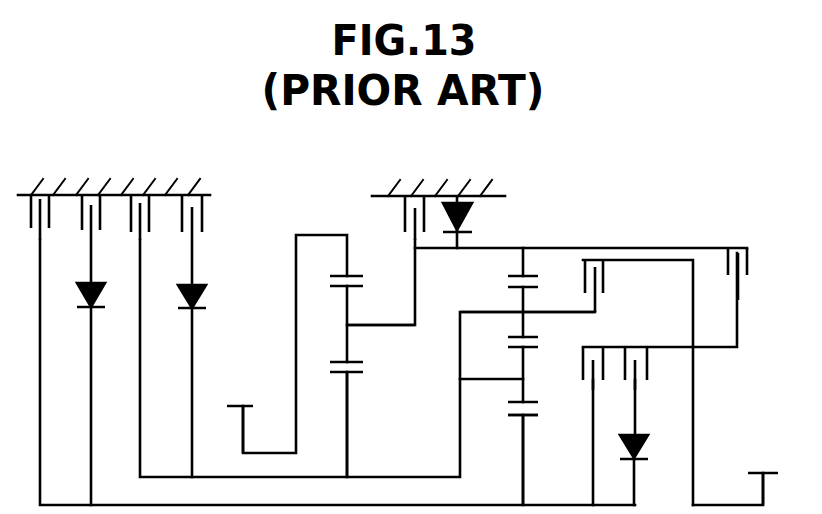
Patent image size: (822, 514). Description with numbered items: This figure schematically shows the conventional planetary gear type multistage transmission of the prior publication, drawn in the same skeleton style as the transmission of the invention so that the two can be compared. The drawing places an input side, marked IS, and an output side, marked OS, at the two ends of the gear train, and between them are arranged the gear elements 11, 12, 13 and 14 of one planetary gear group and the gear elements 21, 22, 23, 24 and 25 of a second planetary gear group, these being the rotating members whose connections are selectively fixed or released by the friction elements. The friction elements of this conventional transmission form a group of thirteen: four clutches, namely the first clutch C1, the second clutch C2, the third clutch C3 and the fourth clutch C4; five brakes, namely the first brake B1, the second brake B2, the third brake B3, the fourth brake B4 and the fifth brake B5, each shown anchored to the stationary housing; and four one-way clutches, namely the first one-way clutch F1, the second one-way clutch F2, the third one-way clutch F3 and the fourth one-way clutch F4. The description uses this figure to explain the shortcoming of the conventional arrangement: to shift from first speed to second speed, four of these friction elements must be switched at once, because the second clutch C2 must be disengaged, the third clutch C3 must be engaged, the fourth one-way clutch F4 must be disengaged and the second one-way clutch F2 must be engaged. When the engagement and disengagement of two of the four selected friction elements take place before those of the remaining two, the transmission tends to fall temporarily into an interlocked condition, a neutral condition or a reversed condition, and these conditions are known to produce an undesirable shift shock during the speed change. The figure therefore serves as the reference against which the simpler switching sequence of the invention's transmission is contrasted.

The fifth brake B5 is at (49, 213).
The fourth brake B4 is at (100, 213).
The third brake B3 is at (149, 213).
The second brake B2 is at (203, 220).
The first brake B1 is at (400, 218).
The fourth one-way clutch F4 is at (102, 290).
The third one-way clutch F3 is at (205, 292).
The second one-way clutch F2 is at (470, 213).
The first one-way clutch F1 is at (642, 443).
The output shaft OS is at (240, 402).
The input shaft IS is at (762, 470).
The planetary gear element 13 is at (355, 276).
The planetary gear element 14 is at (383, 327).
The planetary gear element 12 is at (358, 355).
The planetary gear element 11 is at (355, 375).
The planetary gear element 24 is at (505, 275).
The planetary gear element 23 is at (510, 337).
The planetary gear element 22 is at (512, 400).
The planetary gear element 21 is at (515, 418).
The planetary gear element 25 is at (553, 314).
The first clutch C1 is at (749, 257).
The second clutch C2 is at (605, 283).
The third clutch C3 is at (647, 363).
The fourth clutch C4 is at (583, 364).